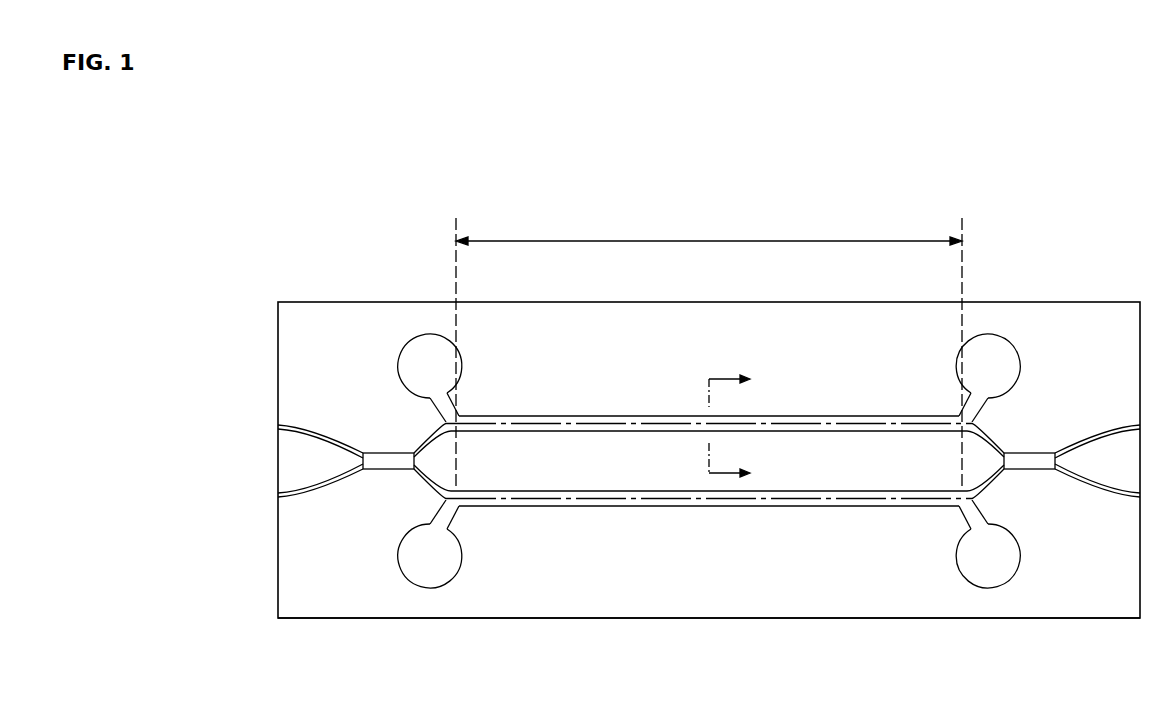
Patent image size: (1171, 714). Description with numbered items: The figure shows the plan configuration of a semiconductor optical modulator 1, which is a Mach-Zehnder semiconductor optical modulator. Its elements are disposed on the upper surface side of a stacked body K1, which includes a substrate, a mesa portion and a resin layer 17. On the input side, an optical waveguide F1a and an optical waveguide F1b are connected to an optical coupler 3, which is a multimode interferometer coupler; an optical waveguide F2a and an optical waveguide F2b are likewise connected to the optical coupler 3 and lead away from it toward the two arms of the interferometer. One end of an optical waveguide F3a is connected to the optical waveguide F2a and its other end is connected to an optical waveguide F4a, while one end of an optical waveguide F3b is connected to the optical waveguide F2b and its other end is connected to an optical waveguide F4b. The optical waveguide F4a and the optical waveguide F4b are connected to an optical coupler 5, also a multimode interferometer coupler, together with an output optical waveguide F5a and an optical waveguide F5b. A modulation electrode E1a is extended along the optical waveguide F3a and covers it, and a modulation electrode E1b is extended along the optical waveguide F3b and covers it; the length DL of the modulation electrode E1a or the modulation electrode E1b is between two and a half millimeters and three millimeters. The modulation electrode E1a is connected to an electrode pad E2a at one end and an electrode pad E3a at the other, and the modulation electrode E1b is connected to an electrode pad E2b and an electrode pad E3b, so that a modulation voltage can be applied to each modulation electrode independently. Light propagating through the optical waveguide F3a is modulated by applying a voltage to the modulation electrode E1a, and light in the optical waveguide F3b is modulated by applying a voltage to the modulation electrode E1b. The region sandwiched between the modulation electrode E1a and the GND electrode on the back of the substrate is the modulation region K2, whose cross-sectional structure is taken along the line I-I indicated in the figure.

The semiconductor optical modulator 1 is at (1000, 176).
The optical coupler 3 is at (381, 453).
The optical coupler 5 is at (1043, 453).
The resin layer 17 is at (798, 318).
The length of the modulation electrode DL is at (709, 352).
The modulation electrode E1a is at (518, 416).
The modulation electrode E1b is at (595, 507).
The electrode pad E2a is at (430, 348).
The electrode pad E2b is at (453, 563).
The electrode pad E3a is at (988, 347).
The electrode pad E3b is at (1002, 567).
The optical waveguide F1a is at (308, 428).
The optical waveguide F1b is at (312, 498).
The optical waveguide F2a is at (426, 427).
The optical waveguide F2b is at (415, 486).
The optical waveguide F3a is at (622, 422).
The optical waveguide F3b is at (747, 497).
The optical waveguide F4a is at (993, 428).
The optical waveguide F4b is at (1002, 482).
The optical waveguide F5a is at (1110, 425).
The optical waveguide F5b is at (1110, 493).
The stacked body K1 is at (992, 618).
The modulation region K2 is at (826, 399).